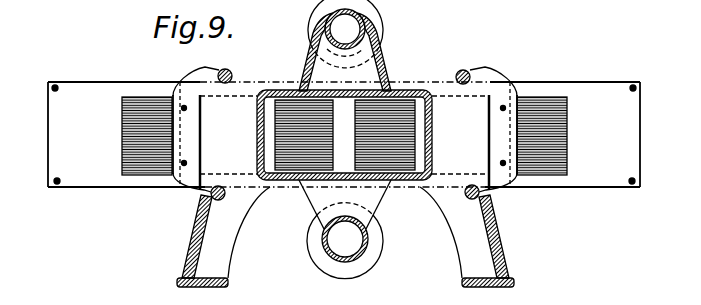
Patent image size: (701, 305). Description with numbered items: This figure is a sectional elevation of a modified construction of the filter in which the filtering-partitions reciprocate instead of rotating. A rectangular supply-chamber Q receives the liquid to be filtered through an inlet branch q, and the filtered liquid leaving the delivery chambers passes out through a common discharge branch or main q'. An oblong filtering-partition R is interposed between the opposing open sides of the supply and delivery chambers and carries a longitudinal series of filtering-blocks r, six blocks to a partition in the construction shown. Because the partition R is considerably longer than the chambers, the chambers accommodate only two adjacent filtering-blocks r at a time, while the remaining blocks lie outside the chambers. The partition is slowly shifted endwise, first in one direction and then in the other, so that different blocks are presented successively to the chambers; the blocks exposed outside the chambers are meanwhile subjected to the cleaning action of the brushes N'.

The oblong filtering-partition R is at (344, 134).
The filtering-blocks r is at (122, 141).
The brushes N' is at (364, 126).
The supply-chamber Q is at (432, 124).
The inlet branch q is at (345, 45).
The common discharge branch or main q' is at (345, 229).